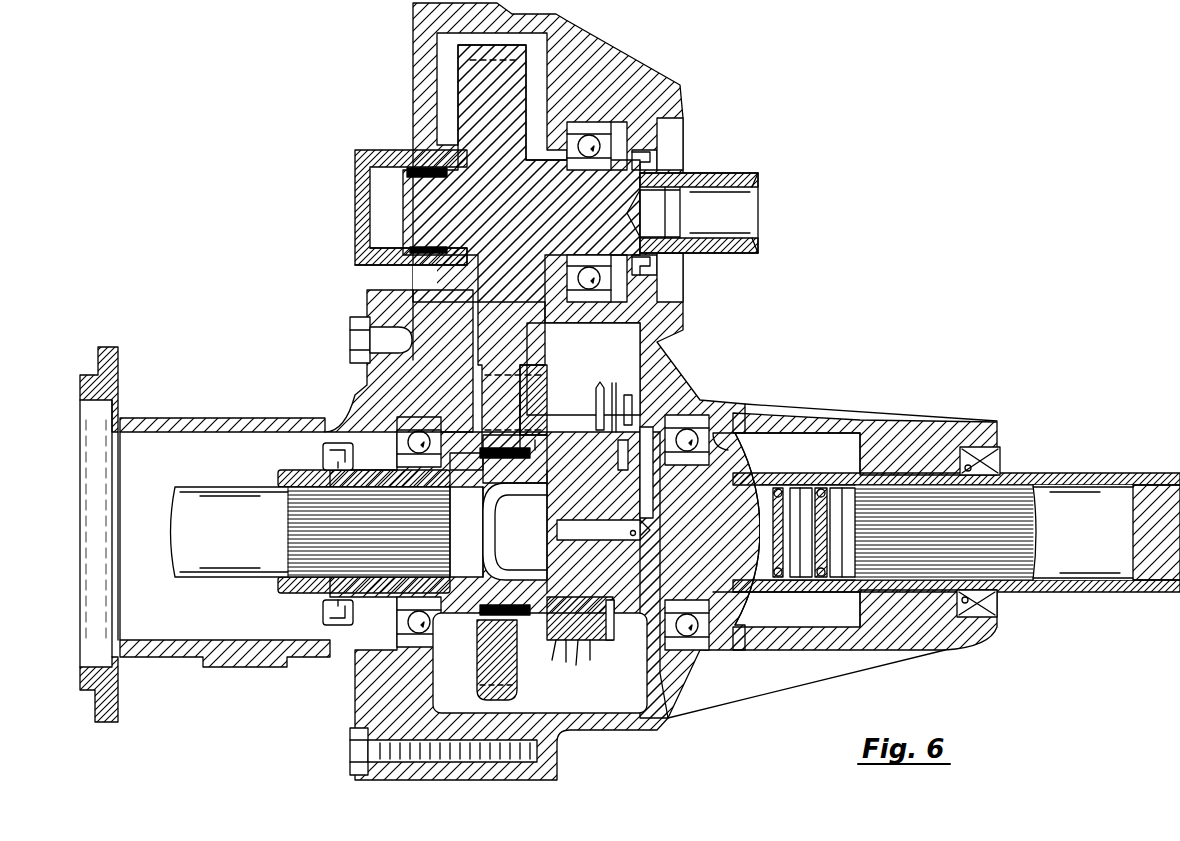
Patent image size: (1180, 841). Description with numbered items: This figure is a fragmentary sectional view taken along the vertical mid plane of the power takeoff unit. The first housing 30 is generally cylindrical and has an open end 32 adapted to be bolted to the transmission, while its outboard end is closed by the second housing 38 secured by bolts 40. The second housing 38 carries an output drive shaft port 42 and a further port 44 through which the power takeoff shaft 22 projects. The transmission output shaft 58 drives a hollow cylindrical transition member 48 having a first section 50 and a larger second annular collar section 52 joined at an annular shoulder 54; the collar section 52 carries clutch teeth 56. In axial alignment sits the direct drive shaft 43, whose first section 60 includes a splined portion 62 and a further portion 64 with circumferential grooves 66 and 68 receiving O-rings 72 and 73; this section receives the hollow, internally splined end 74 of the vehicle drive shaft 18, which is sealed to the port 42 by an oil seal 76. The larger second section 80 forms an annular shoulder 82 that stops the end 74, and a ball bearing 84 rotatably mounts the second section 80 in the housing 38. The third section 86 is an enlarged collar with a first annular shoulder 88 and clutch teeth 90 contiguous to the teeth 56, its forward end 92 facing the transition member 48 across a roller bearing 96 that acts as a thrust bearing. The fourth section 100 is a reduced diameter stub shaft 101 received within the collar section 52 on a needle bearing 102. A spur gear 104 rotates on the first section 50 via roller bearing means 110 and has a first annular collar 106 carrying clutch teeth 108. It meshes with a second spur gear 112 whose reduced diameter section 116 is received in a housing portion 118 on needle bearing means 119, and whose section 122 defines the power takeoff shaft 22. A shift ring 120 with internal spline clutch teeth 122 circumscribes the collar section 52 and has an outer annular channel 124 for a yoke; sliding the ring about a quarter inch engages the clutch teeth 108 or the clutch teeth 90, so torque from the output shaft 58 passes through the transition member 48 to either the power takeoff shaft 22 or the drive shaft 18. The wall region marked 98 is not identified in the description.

The drive shaft 18 is at (1147, 473).
The power takeoff shaft 22 is at (760, 245).
The first housing 30 is at (215, 418).
The open end 32 is at (80, 492).
The second housing 38 is at (690, 400).
The bolts 40 is at (350, 345).
The output drive shaft port 42 is at (1000, 455).
The direct drive shaft 43 is at (1000, 516).
The further port 44 is at (690, 147).
The transition member 48 is at (285, 475).
The first section 50 is at (335, 455).
The second annular collar section 52 is at (560, 625).
The annular shoulder 54 is at (520, 456).
The clutch teeth 56 is at (505, 640).
The transmission output shaft 58 is at (200, 521).
The first section 60 is at (778, 580).
The splined portion 62 is at (905, 497).
The further portion 64 is at (840, 490).
The circumferential groove 66 is at (773, 510).
The circumferential groove 68 is at (815, 580).
The O-ring 72 is at (810, 490).
The O-ring 73 is at (822, 580).
The drive shaft end 74 is at (745, 473).
The oil seal 76 is at (998, 603).
The second section 80 is at (730, 598).
The annular shoulder 82 is at (735, 440).
The ball bearing 84 is at (722, 410).
The third section 86 is at (610, 642).
The first annular shoulder 88 is at (628, 420).
The clutch teeth 90 is at (617, 400).
The forward end 92 is at (600, 388).
The roller bearing 96 is at (615, 455).
The wall 98 is at (668, 468).
The fourth section 100 is at (500, 575).
The stub shaft 101 is at (530, 515).
The needle bearing 102 is at (488, 498).
The spur gear 104 is at (530, 380).
The first annular collar 106 is at (525, 420).
The clutch teeth 108 is at (548, 455).
The roller bearing means 110 is at (462, 460).
The second spur gear 112 is at (489, 218).
The reduced diameter section 116 is at (400, 192).
The housing portion 118 is at (360, 250).
The needle bearing means 119 is at (425, 170).
The shift ring 120 is at (548, 672).
The internal spline clutch teeth 122 is at (660, 262).
The annular channel 124 is at (575, 652).